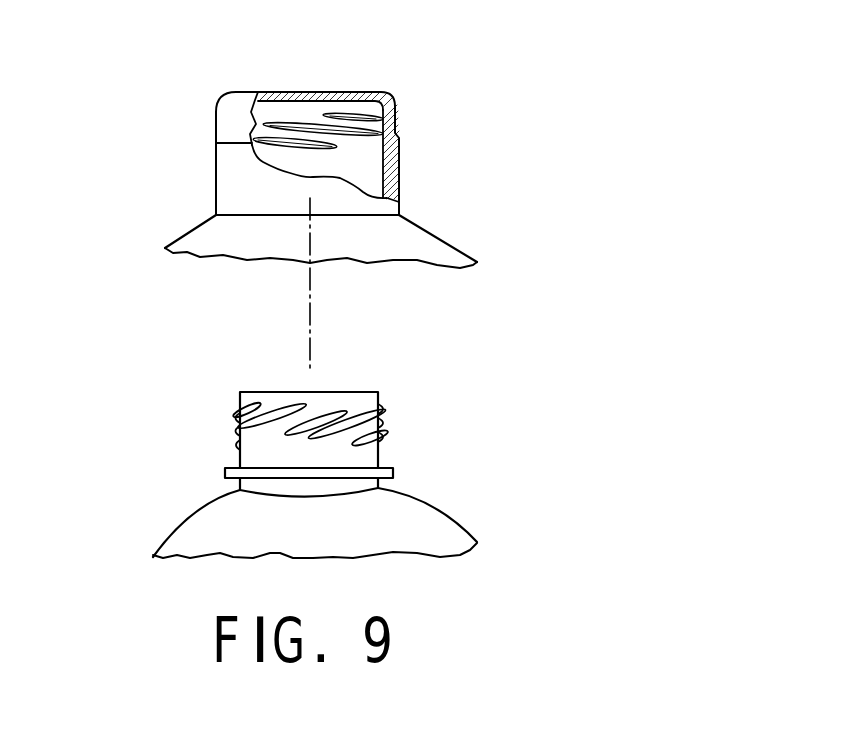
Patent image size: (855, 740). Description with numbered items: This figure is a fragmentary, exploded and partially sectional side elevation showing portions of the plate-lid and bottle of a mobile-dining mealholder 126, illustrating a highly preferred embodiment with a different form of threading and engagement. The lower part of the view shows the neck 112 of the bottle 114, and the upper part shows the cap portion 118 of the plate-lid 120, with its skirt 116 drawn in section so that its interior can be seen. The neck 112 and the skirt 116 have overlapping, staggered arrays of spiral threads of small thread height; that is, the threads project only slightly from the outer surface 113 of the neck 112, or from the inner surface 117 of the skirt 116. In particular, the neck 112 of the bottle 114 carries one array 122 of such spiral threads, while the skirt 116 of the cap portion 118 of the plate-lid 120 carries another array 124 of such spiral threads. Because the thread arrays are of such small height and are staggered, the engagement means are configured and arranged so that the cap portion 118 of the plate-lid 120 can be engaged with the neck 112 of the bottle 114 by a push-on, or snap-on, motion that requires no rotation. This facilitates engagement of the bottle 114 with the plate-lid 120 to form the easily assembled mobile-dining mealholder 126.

The neck 112 is at (283, 395).
The outer surface 113 is at (256, 451).
The bottle 114 is at (418, 505).
The skirt 116 is at (227, 124).
The inner surface 117 is at (313, 118).
The cap portion 118 is at (399, 175).
The plate-lid 120 is at (432, 242).
The array of spiral threads 122 is at (380, 433).
The array of spiral threads 124 is at (357, 130).
The mobile-dining mealholder 126 is at (163, 300).